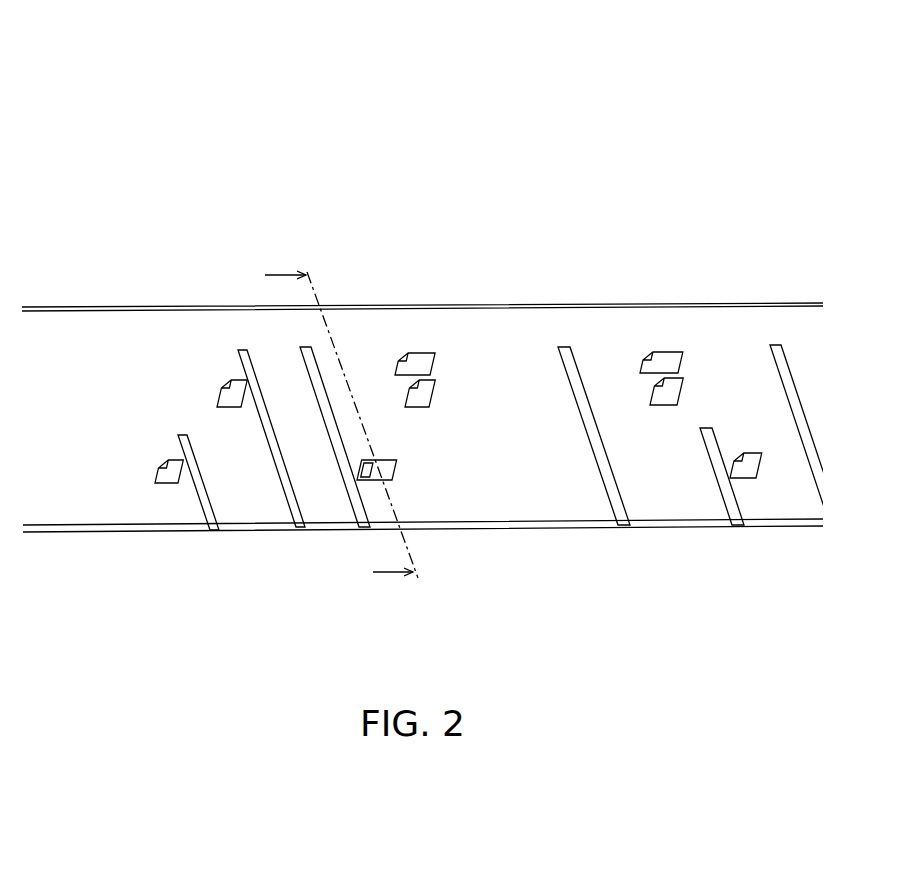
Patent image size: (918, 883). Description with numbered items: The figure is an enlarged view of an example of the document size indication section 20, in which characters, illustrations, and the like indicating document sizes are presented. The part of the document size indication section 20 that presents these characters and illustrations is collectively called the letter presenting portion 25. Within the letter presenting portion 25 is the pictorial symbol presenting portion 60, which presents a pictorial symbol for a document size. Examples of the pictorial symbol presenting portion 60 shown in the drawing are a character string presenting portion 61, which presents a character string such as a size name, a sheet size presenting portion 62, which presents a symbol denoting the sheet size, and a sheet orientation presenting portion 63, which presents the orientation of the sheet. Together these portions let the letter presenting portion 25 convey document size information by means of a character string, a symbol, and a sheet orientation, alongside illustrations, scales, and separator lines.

The document size indication section 20 is at (112, 112).
The letter presenting portion 25 is at (78, 342).
The pictorial symbol presenting portion 60 is at (393, 178).
The character string presenting portion 61 is at (112, 355).
The sheet size presenting portion 62 is at (352, 349).
The sheet orientation presenting portion 63 is at (413, 351).